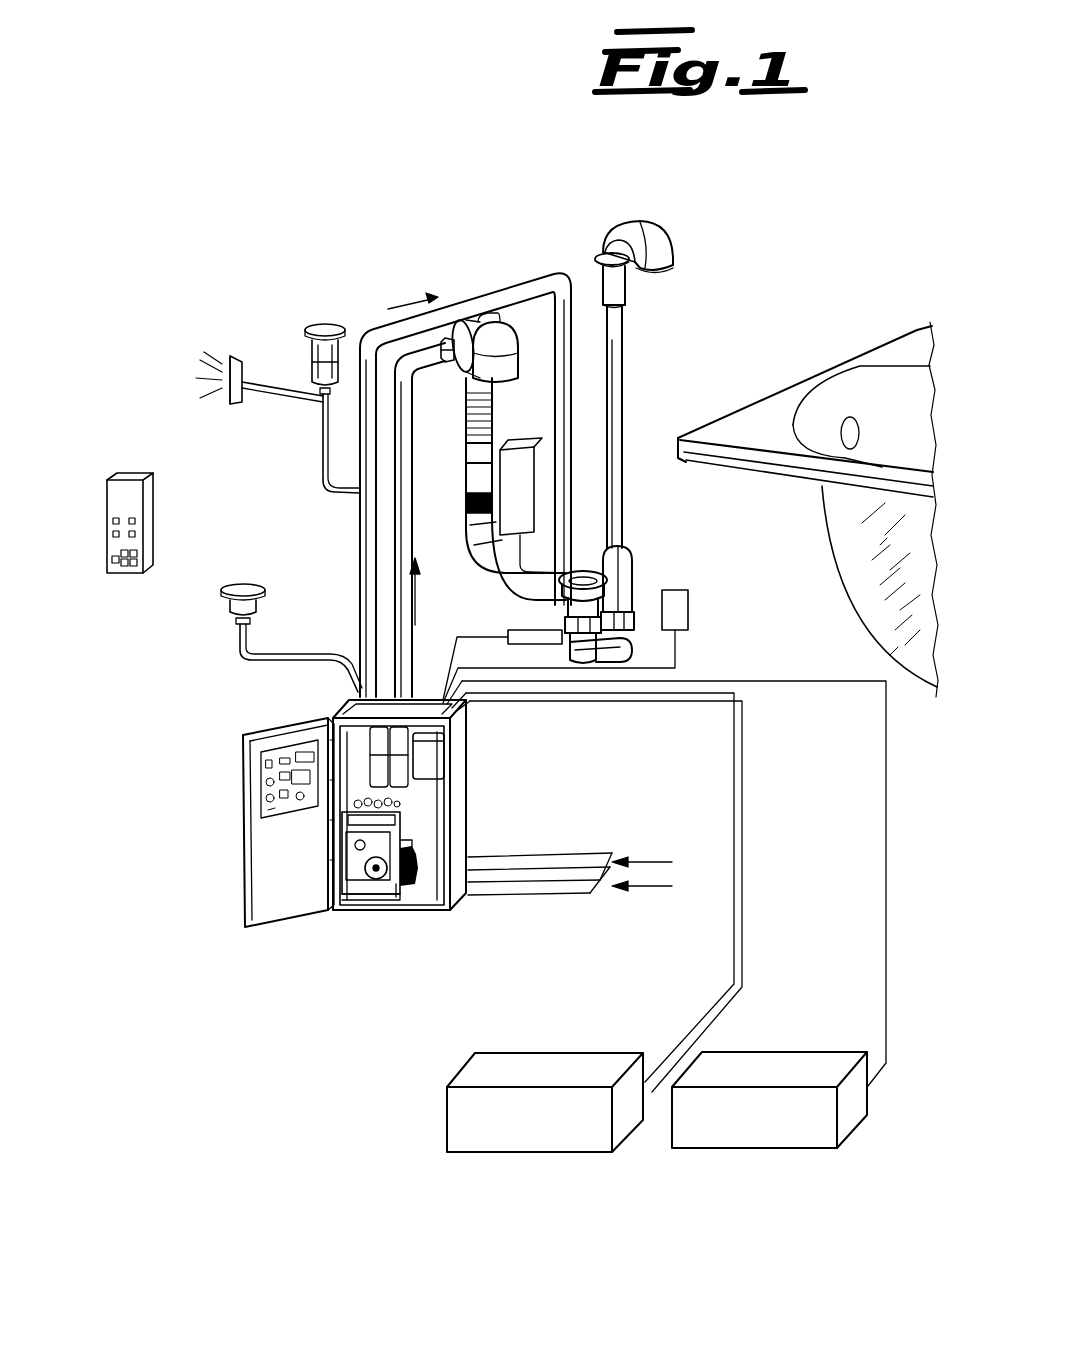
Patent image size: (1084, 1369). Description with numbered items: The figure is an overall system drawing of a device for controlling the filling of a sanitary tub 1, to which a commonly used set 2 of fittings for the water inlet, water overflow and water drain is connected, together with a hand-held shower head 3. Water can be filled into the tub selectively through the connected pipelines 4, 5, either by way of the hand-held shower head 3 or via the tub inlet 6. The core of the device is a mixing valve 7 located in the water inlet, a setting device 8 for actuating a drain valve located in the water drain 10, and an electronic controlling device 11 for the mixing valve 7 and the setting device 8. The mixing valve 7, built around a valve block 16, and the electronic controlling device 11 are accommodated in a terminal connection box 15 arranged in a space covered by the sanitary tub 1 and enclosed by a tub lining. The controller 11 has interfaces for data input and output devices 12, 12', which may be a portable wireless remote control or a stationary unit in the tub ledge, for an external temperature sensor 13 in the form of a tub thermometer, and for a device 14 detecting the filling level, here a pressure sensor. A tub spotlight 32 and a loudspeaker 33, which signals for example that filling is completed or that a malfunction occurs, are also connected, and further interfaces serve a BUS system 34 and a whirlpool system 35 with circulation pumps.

The sanitary tub 1 is at (867, 352).
The set of fittings 2 is at (591, 566).
The hand-held shower head 3 is at (662, 221).
The pipeline 4 is at (620, 326).
The pipeline 5 is at (400, 440).
The tub inlet 6 is at (465, 395).
The mixing valve 7 is at (374, 885).
The setting device 8 is at (520, 442).
The water drain 10 is at (598, 578).
The electronic controlling device 11 is at (437, 762).
The data input and output device 12 is at (125, 477).
The data input and output device 12' is at (335, 366).
The external temperature sensor 13 is at (672, 607).
The device for detecting the filling level 14 is at (527, 641).
The terminal connection box 15 is at (458, 880).
The valve block 16 is at (395, 890).
The tub spotlight 32 is at (241, 588).
The loudspeaker 33 is at (235, 356).
The BUS system 34 is at (512, 1130).
The whirlpool system 35 is at (770, 1132).